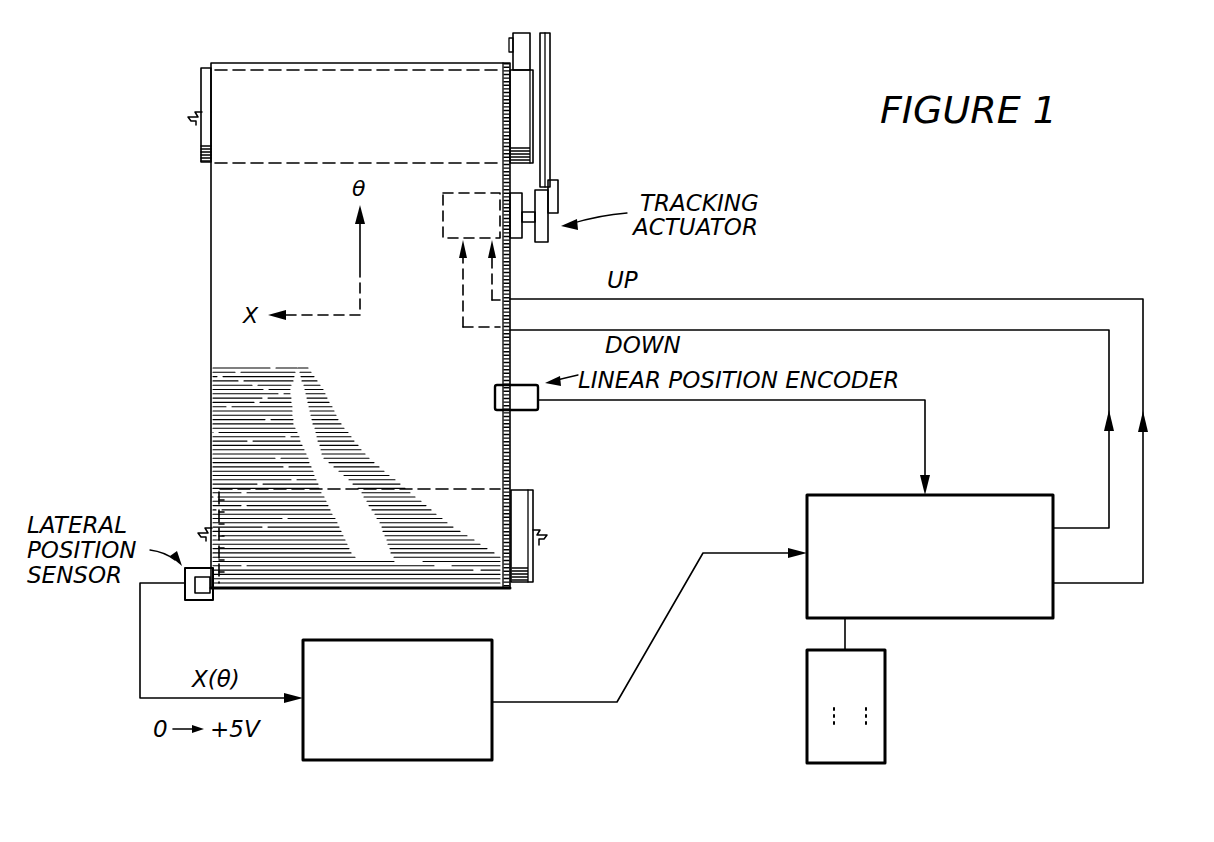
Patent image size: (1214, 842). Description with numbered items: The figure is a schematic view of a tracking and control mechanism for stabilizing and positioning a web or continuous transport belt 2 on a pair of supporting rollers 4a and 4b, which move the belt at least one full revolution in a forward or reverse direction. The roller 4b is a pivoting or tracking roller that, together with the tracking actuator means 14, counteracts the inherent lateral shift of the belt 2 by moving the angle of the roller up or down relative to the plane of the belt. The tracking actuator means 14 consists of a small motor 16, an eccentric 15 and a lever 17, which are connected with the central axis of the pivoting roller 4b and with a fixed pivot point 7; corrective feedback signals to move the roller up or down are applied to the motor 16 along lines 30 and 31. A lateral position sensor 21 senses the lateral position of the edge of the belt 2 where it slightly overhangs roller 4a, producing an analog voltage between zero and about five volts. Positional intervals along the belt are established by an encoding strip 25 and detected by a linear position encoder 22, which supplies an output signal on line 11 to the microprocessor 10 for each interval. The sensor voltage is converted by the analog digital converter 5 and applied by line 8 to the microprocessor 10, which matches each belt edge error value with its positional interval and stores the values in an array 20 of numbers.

The belt 2 is at (211, 273).
The supporting roller 4a is at (520, 520).
The pivoting roller 4b is at (522, 105).
The analog digital converter 5 is at (405, 642).
The fixed pivot point 7 is at (552, 45).
The line 8 is at (597, 702).
The microprocessor controller 10 is at (967, 620).
The line 11 is at (927, 442).
The tracking actuator means 14 is at (555, 253).
The eccentric 15 is at (543, 187).
The motor 16 is at (513, 237).
The lever 17 is at (552, 148).
The array 20 is at (807, 700).
The lateral position sensor 21 is at (192, 602).
The linear position encoder 22 is at (515, 402).
The encoding strip 25 is at (510, 468).
The line 30 is at (1106, 414).
The line 31 is at (1146, 414).